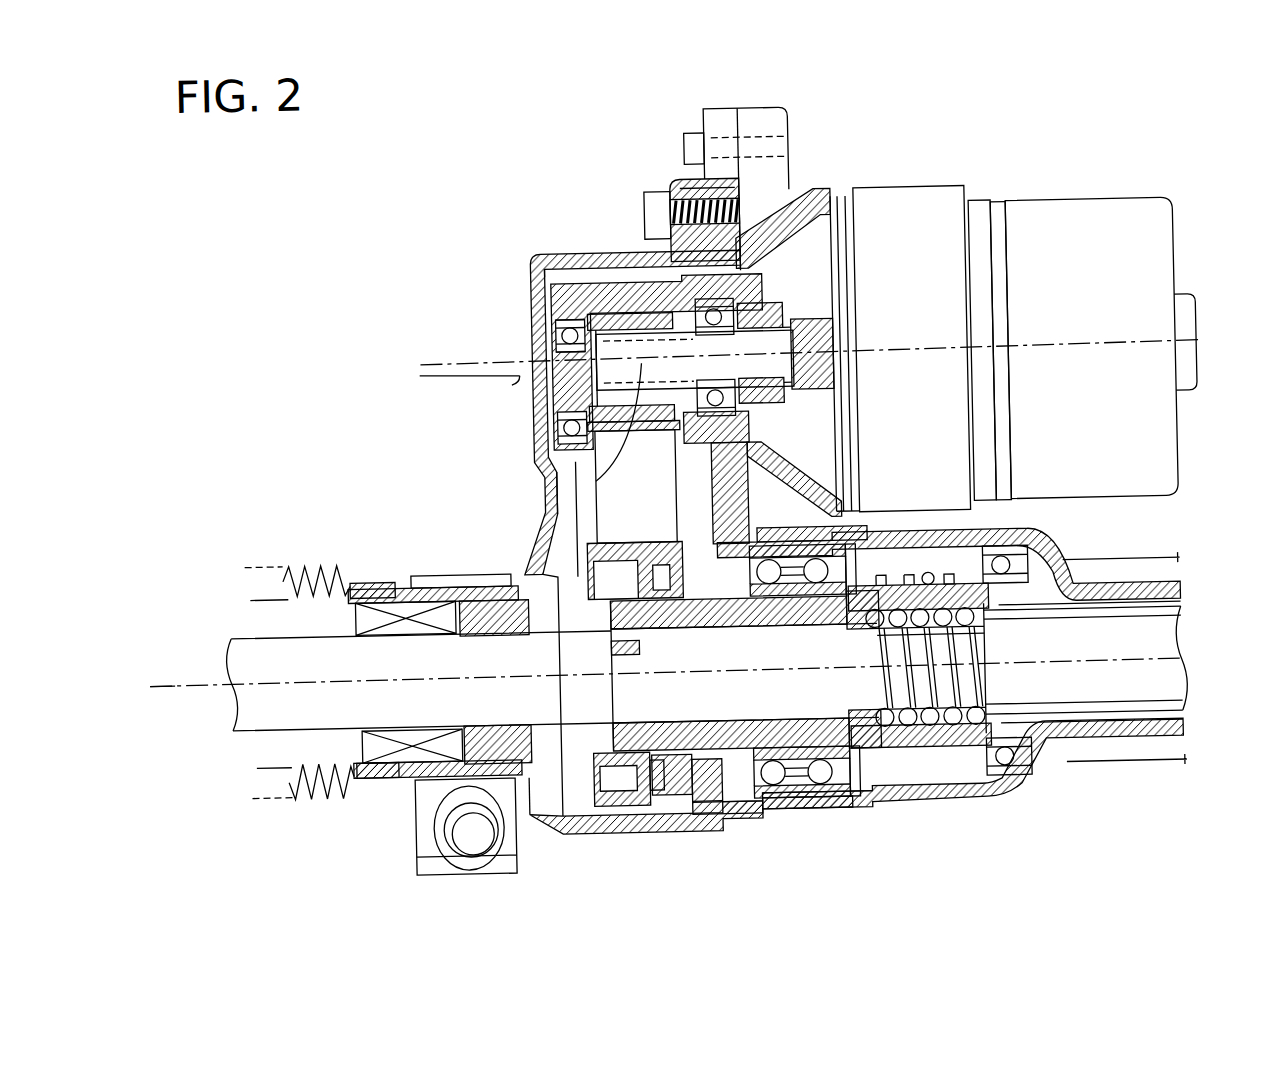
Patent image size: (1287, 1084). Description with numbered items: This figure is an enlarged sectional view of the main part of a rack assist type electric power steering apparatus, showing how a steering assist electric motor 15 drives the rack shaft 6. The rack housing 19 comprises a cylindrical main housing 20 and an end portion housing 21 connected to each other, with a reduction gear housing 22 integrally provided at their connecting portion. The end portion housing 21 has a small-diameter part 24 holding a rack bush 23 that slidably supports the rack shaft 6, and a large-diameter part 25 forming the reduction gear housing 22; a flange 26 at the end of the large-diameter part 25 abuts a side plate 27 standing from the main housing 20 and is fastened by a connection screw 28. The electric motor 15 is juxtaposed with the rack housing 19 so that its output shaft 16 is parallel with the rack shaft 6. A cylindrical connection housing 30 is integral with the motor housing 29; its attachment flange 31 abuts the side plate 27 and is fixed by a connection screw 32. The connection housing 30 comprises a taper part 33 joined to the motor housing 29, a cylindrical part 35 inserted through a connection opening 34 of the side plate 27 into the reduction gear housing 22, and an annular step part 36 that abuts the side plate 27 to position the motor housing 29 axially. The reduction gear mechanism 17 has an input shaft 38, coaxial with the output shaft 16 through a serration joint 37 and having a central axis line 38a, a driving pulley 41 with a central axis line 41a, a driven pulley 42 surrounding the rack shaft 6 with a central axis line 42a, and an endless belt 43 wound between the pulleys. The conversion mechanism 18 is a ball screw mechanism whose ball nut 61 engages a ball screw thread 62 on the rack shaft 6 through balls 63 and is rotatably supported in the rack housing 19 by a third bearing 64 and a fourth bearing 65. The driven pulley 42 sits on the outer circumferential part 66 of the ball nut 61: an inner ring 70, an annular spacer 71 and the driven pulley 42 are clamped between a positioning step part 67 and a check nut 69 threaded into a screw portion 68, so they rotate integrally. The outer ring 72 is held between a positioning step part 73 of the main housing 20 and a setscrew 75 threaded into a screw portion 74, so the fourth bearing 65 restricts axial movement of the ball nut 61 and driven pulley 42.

The rack shaft 6 is at (243, 722).
The steering assist electric motor 15 is at (1095, 208).
The output shaft 16 is at (826, 352).
The reduction gear mechanism 17 is at (591, 491).
The conversion mechanism 18 is at (948, 750).
The rack housing 19 is at (1050, 553).
The main housing 20 is at (846, 812).
The end portion housing 21 is at (668, 833).
The reduction gear housing 22 is at (540, 263).
The rack bush 23 is at (423, 607).
The small-diameter part 24 is at (480, 595).
The large-diameter part 25 is at (572, 262).
The flange 26 is at (690, 189).
The side plate 27 is at (720, 172).
The connection screw 28 is at (655, 217).
The motor housing 29 is at (928, 205).
The connection housing 30 is at (838, 192).
The attachment flange 31 is at (763, 130).
The connection screw 32 is at (695, 150).
The taper part 33 is at (798, 487).
The connection opening 34 is at (770, 448).
The cylindrical part 35 is at (568, 308).
The annular step part 36 is at (768, 475).
The joint 37 is at (820, 300).
The input shaft 38 is at (555, 468).
The central axis line 38a is at (442, 358).
The driving pulley 41 is at (567, 377).
The central axis line 41a is at (452, 376).
The driven pulley 42 is at (652, 812).
The central axis line 42a is at (175, 680).
The belt 43 is at (617, 526).
The ball nut 61 is at (925, 748).
The ball screw thread 62 is at (1000, 685).
The balls 63 is at (972, 742).
The third bearing 64 is at (1015, 805).
The fourth bearing 65 is at (808, 812).
The outer circumferential part 66 is at (885, 790).
The positioning step part 67 is at (846, 748).
The screw portion 68 is at (590, 800).
The check nut 69 is at (628, 790).
The inner ring 70 is at (760, 748).
The annular spacer 71 is at (712, 748).
The outer ring 72 is at (788, 800).
The positioning step part 73 is at (848, 548).
The screw portion 74 is at (708, 798).
The setscrew 75 is at (737, 808).